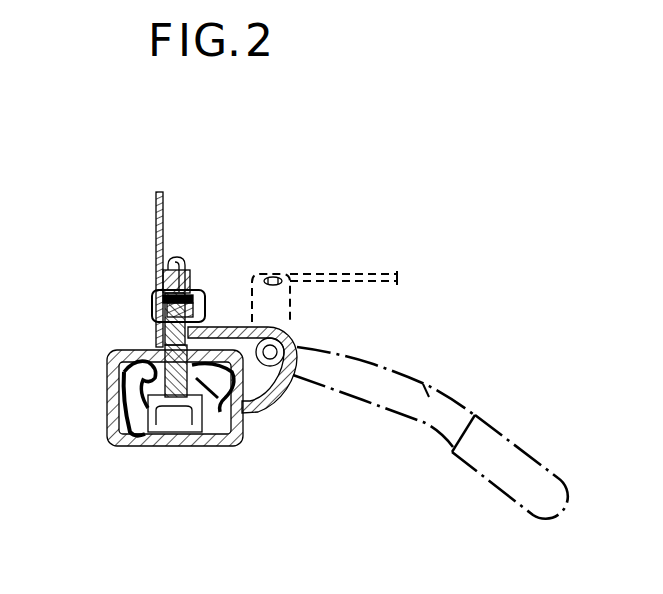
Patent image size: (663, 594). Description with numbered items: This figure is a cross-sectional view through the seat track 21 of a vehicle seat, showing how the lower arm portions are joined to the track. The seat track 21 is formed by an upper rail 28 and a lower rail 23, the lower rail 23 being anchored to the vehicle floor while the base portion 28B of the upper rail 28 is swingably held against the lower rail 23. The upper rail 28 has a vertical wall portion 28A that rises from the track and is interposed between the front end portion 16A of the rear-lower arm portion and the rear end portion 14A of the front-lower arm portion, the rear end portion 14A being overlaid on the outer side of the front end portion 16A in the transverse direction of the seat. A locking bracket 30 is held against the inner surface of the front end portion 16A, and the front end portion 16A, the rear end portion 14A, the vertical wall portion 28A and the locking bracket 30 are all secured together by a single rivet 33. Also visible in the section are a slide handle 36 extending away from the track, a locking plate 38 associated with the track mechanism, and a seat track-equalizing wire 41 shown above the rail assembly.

The rear end portion 14A is at (155, 204).
The front end portion 16A is at (181, 257).
The locking bracket 30 is at (194, 271).
The vertical wall portion 28A is at (163, 272).
The rivet 33 is at (151, 309).
The upper rail 28 is at (151, 341).
The locking plate 38 is at (266, 410).
The slide handle 36 is at (427, 386).
The seat track-equalizing wire 41 is at (365, 272).
The seat track 21 is at (108, 446).
The base portion 28B is at (155, 434).
The lower rail 23 is at (200, 432).